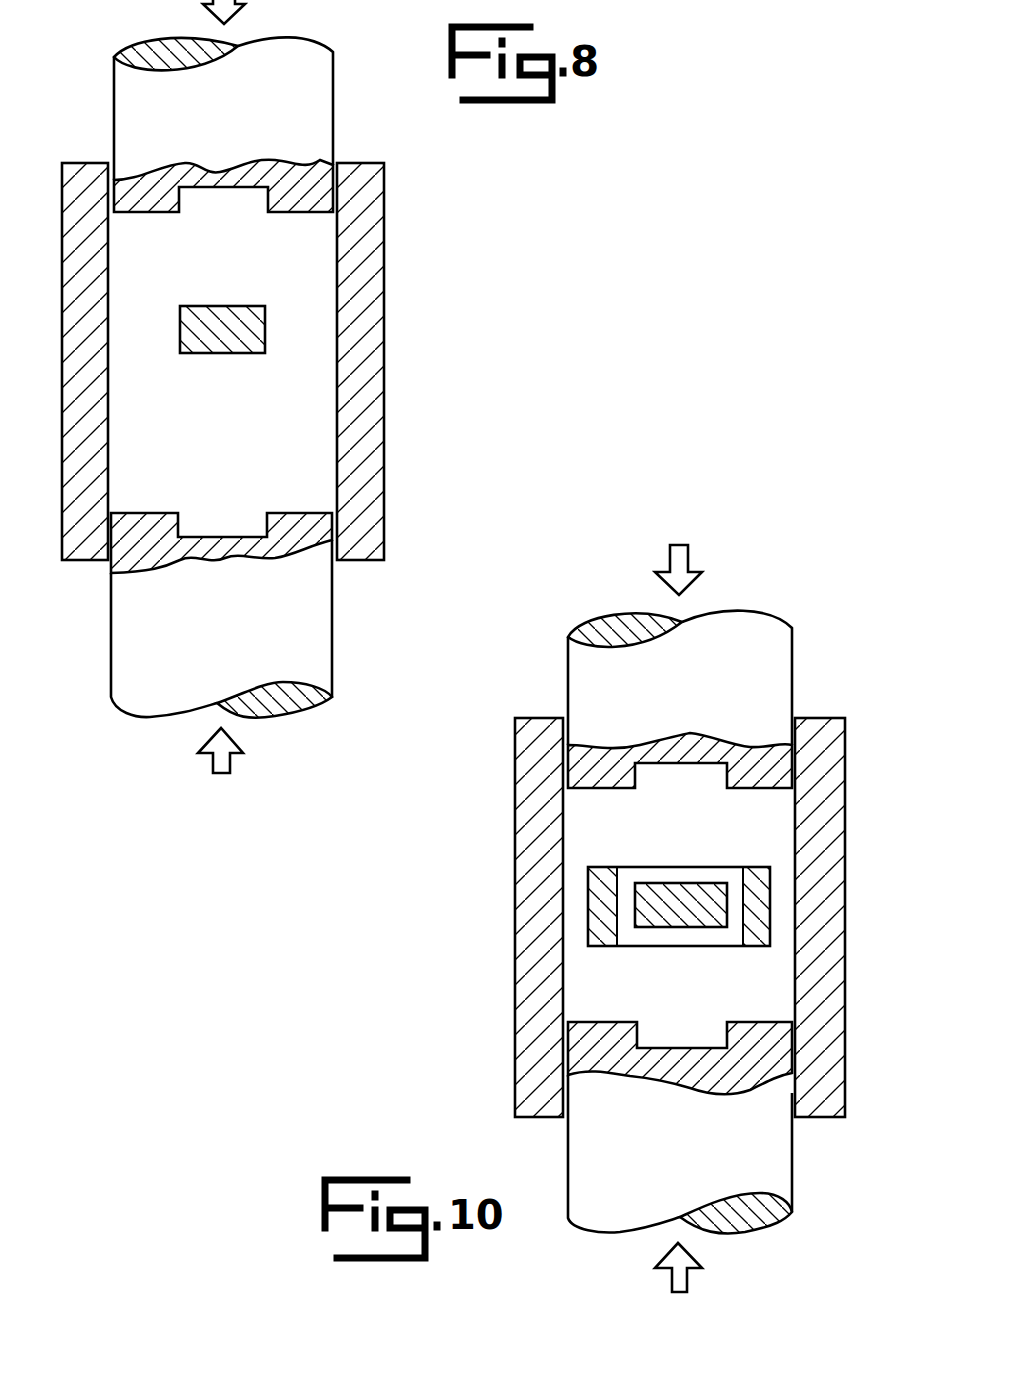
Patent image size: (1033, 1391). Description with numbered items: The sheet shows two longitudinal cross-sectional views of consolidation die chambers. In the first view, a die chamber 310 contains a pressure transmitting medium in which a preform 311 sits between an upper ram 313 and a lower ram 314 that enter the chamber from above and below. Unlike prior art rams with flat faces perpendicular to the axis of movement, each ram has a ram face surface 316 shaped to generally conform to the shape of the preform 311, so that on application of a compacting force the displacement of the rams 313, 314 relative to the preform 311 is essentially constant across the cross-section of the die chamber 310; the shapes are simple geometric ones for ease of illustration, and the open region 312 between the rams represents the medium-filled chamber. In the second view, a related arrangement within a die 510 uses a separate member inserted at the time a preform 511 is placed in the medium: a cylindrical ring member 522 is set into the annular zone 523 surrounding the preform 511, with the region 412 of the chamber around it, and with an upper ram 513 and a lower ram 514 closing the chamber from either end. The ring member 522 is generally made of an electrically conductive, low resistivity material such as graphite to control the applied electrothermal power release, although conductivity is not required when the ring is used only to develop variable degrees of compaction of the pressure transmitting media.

In FIG. 8, the die chamber 310 is at (368, 495).
In FIG. 8, the preform 311 is at (265, 328).
In FIG. 8, the die cavity 312 is at (312, 428).
In FIG. 8, the ram 313 is at (320, 62).
In FIG. 8, the ram 314 is at (318, 657).
In FIG. 8, the ram face surface 316 is at (248, 192).
In FIG. 10, the die cavity 412 is at (781, 969).
In FIG. 10, the die 510 is at (832, 1043).
In FIG. 10, the preform 511 is at (710, 888).
In FIG. 10, the upper punch 513 is at (770, 690).
In FIG. 10, the lower punch 514 is at (783, 1157).
In FIG. 10, the cylindrical ring member 522 is at (760, 903).
In FIG. 10, the annular zone 523 is at (620, 932).